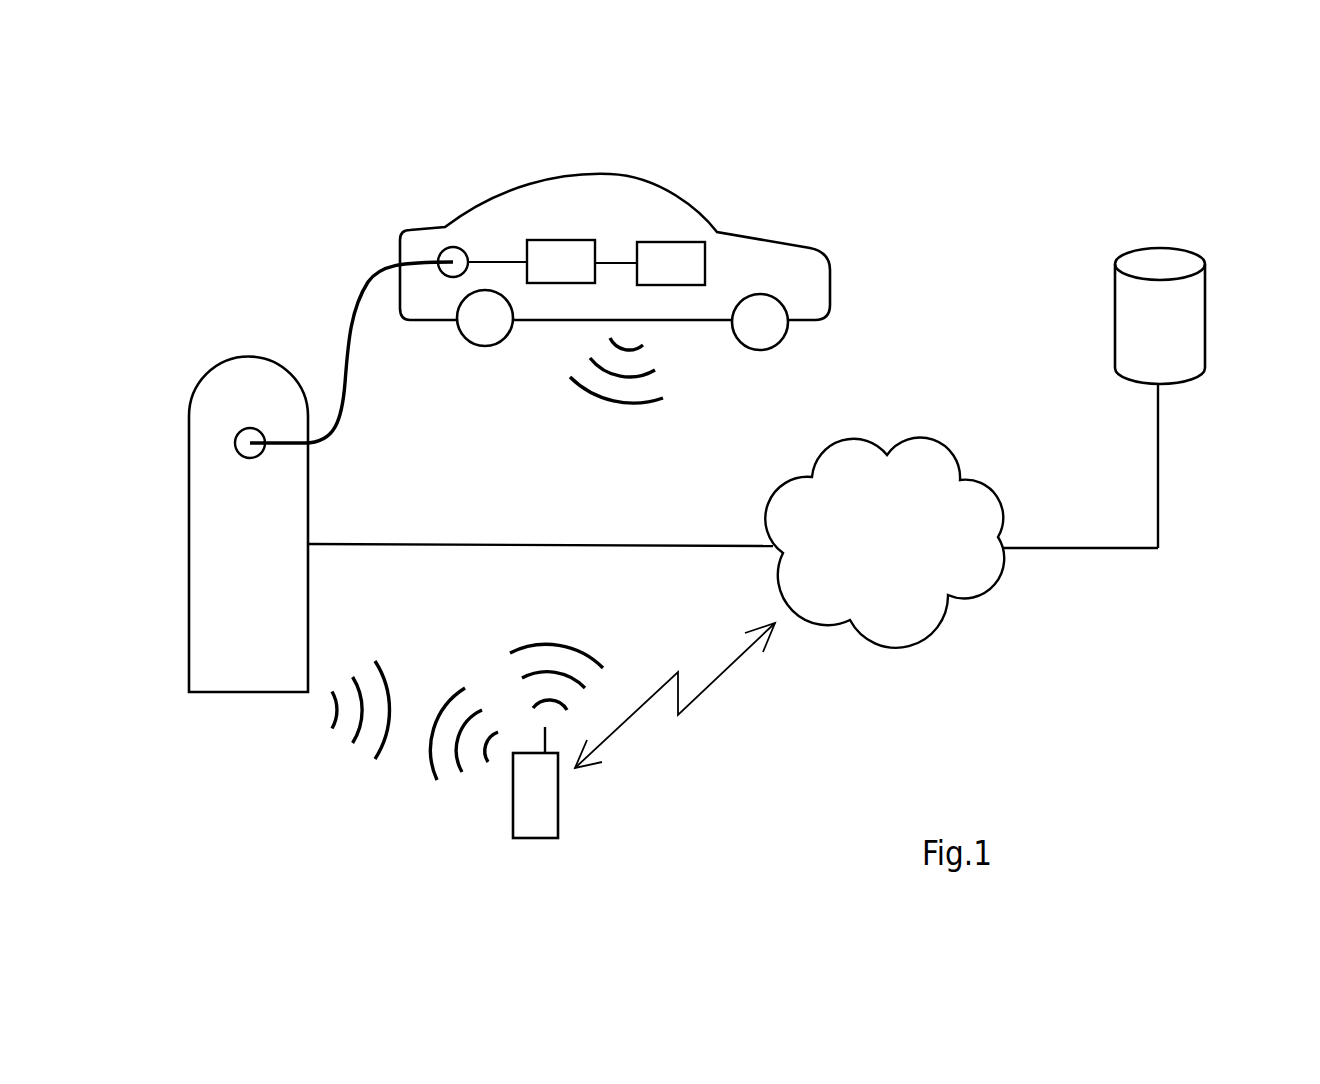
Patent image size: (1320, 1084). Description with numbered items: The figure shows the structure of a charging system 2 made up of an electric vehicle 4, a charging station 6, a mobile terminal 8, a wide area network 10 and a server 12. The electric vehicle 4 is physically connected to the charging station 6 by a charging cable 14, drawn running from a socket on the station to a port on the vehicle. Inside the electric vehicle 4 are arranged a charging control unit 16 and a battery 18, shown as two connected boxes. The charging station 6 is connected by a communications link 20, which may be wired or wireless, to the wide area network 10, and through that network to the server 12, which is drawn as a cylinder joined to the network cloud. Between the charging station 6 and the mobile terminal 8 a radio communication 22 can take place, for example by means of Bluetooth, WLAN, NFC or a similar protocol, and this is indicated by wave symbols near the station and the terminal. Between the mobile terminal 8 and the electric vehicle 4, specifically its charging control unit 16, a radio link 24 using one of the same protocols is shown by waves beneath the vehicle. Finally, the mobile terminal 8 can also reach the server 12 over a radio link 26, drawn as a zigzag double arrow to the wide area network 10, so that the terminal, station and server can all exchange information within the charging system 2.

The charging system 2 is at (1041, 183).
The electric vehicle 4 is at (583, 173).
The charging station 6 is at (188, 560).
The mobile terminal 8 is at (558, 817).
The wide area network 10 is at (872, 548).
The server 12 is at (1207, 318).
The charging cable 14 is at (348, 360).
The charging control unit 16 is at (548, 275).
The battery 18 is at (658, 277).
The communications link 20 is at (500, 542).
The radio communication 22 is at (356, 808).
The radio link 24 is at (678, 407).
The radio link 26 is at (717, 683).